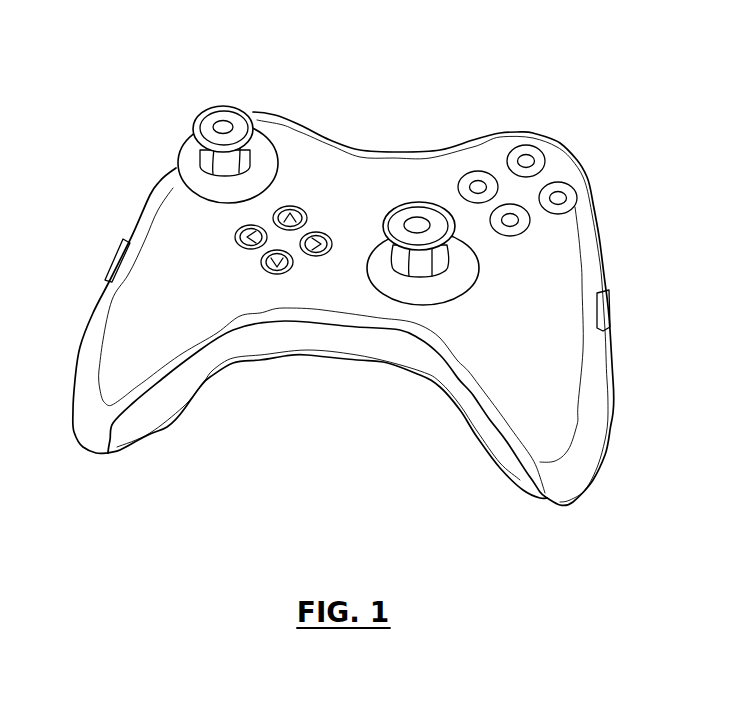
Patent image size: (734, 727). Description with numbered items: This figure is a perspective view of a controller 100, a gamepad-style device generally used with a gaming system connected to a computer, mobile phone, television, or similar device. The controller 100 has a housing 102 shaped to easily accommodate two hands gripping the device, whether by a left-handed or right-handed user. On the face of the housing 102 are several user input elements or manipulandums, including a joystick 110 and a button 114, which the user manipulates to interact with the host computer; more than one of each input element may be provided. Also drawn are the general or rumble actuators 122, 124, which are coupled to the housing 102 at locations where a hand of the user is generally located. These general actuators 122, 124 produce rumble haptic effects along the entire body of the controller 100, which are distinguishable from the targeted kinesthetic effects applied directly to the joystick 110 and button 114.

The controller 100 is at (375, 306).
The housing 102 is at (590, 257).
The joystick 110 is at (390, 214).
The button 114 is at (527, 156).
The general or rumble actuator 122 is at (610, 322).
The general or rumble actuator 124 is at (113, 256).